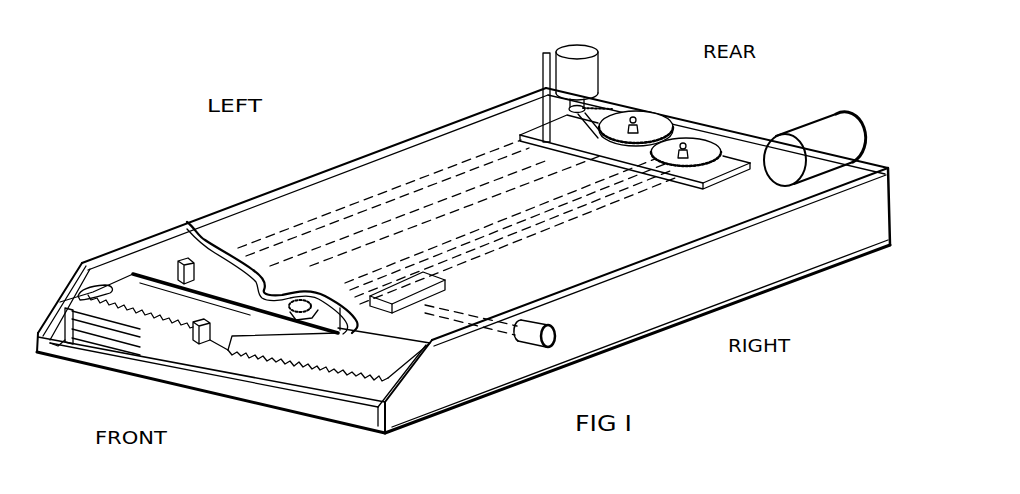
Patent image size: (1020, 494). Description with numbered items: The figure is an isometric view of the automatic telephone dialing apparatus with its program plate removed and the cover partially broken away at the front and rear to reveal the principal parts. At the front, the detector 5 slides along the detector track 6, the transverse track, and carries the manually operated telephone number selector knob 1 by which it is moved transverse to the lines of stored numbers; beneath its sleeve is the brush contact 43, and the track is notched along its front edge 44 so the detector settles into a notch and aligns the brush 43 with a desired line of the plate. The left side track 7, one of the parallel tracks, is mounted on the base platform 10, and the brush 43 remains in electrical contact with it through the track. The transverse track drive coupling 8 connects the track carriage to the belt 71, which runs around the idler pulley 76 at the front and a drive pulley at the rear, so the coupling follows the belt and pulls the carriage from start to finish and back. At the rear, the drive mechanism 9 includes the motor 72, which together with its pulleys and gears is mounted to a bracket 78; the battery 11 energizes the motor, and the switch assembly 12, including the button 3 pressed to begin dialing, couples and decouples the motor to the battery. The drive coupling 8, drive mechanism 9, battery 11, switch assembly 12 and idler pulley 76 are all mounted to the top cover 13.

The telephone number selector knob 1 is at (202, 338).
The button 3 is at (546, 325).
The detector 5 is at (222, 358).
The detector track 6 is at (292, 365).
The left side track 7 is at (99, 358).
The transverse track drive coupling 8 is at (304, 280).
The drive mechanism 9 is at (716, 137).
The base platform 10 is at (382, 421).
The battery 11 is at (828, 116).
The switch assembly 12 is at (432, 303).
The top cover 13 is at (583, 268).
The brush contact 43 is at (206, 340).
The front edge 44 is at (266, 356).
The belt 71 is at (388, 257).
The motor 72 is at (588, 48).
The idler pulley 76 is at (68, 352).
The bracket 78 is at (543, 56).